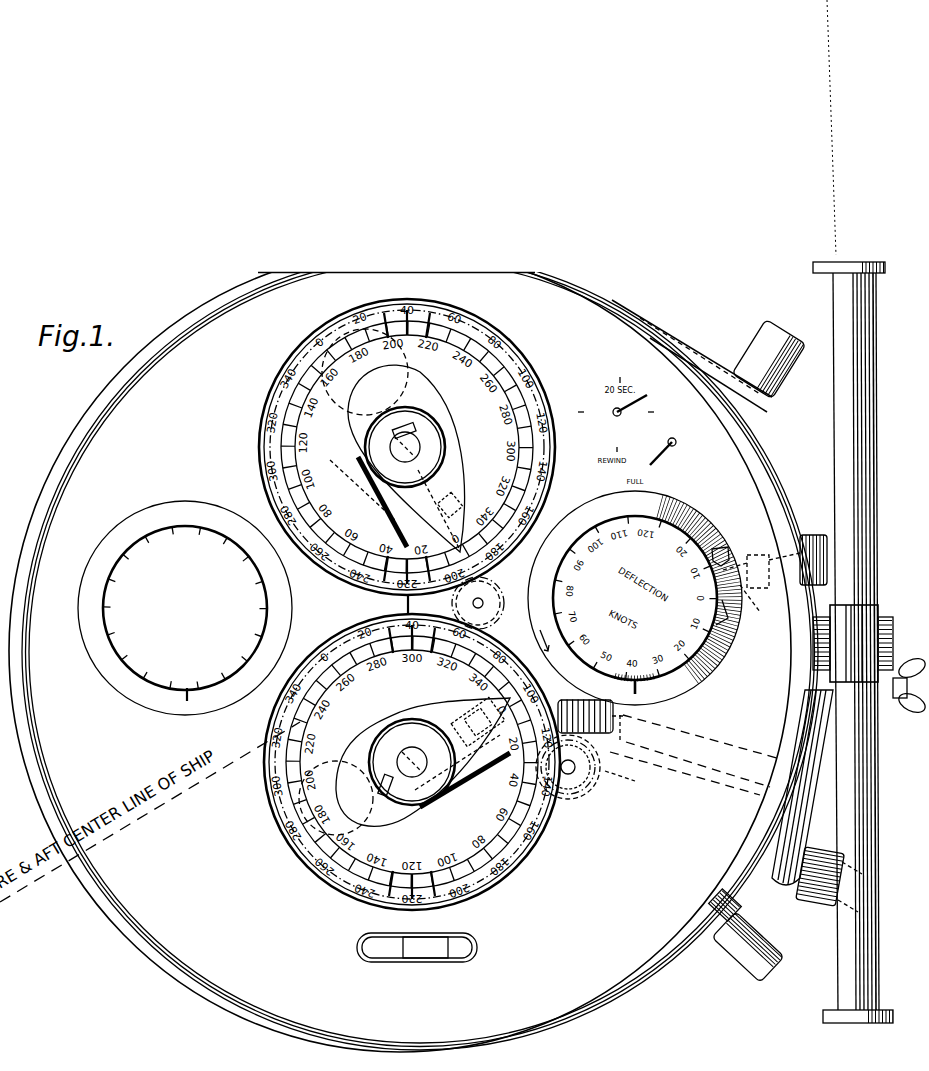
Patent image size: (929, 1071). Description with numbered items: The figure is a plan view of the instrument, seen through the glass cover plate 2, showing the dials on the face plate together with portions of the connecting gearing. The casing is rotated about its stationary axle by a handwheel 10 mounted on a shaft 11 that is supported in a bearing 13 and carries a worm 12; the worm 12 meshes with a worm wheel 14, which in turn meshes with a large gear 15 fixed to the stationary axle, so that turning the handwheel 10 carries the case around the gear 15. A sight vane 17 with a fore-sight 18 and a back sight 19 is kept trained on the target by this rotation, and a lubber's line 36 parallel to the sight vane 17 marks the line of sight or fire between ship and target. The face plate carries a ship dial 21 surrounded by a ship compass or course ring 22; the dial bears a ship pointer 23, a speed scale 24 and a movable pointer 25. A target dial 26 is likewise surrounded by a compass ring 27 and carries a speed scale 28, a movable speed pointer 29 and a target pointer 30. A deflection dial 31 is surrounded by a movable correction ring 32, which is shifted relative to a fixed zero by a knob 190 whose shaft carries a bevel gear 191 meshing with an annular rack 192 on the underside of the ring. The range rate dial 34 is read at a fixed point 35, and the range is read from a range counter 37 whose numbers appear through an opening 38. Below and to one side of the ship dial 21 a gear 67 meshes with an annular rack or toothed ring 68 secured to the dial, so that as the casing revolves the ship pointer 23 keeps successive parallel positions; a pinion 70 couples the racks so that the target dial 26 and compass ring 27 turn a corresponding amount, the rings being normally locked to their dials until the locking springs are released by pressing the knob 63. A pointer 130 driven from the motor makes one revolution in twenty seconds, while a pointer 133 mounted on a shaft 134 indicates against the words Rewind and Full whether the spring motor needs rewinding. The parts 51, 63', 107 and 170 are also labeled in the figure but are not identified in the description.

The glass cover plate 2 is at (413, 651).
The handwheel 10 is at (820, 886).
The shaft 11 is at (693, 750).
The worm 12 is at (643, 691).
The bearing 13 is at (776, 787).
The worm wheel 14 is at (627, 784).
The large gear 15 is at (592, 708).
The sight vane 17 is at (870, 641).
The fore-sight 18 is at (868, 1004).
The back sight 19 is at (862, 285).
The ship dial 21 is at (412, 762).
The ship compass or course ring 22 is at (428, 762).
The ship pointer 23 is at (423, 753).
The speed scale 24 is at (462, 789).
The movable pointer 25 is at (482, 721).
The target dial 26 is at (420, 447).
The compass ring 27 is at (407, 447).
The speed scale 28 is at (362, 495).
The movable speed pointer 29 is at (444, 514).
The target pointer 30 is at (421, 458).
The deflection dial 31 is at (635, 596).
The correction ring 32 is at (697, 581).
The range rate dial 34 is at (185, 596).
The fixed point 35 is at (185, 632).
The lubber's line 36 is at (372, 605).
The range counter 37 is at (425, 969).
The opening 38 is at (427, 933).
The center pivot 51 is at (408, 604).
The knob 63 is at (402, 753).
The hub 63' is at (421, 444).
The gear 67 is at (571, 762).
The annular rack or toothed ring 68 is at (568, 785).
The pinion 70 is at (489, 609).
The knob 107 is at (709, 356).
The pointer 130 is at (635, 417).
The pointer 133 is at (681, 463).
The shaft 134 is at (695, 449).
The knob 170 is at (737, 941).
The knob 190 is at (811, 542).
The bevel gear 191 is at (761, 593).
The annular rack 192 is at (735, 567).